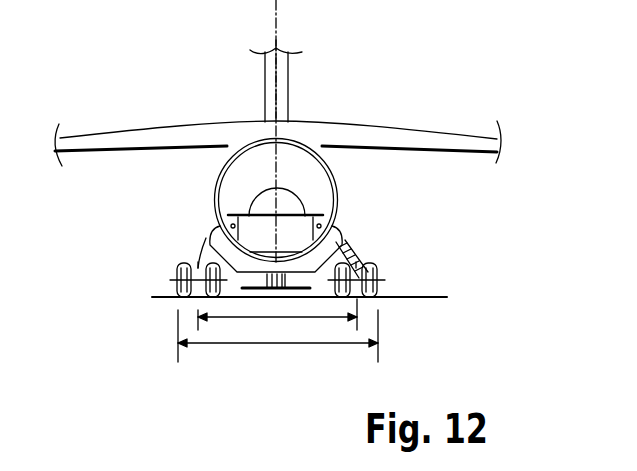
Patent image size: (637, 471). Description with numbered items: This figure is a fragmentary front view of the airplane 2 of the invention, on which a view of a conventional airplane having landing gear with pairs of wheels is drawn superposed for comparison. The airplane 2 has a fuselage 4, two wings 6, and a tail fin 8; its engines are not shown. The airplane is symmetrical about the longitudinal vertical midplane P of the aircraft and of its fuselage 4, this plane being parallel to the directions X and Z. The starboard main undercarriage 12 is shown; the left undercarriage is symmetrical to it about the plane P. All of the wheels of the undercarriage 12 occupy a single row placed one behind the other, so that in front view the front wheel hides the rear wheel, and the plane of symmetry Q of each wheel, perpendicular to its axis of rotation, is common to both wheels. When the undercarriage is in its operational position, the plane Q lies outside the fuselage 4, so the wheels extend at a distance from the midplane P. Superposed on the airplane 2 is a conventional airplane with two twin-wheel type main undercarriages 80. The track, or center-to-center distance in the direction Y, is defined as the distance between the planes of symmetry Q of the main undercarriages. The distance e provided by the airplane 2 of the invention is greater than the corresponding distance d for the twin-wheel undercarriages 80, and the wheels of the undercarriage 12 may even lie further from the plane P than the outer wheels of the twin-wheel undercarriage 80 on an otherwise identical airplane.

The airplane 2 is at (455, 96).
The fuselage 4 is at (340, 187).
The wings 6 is at (141, 136).
The tail fin 8 is at (277, 37).
The main undercarriage 12 is at (357, 239).
The twin-wheel type main undercarriage 80 is at (177, 278).
The longitudinal vertical midplane P is at (277, 100).
The plane of symmetry of the wheel Q is at (198, 268).
The distance between planes of symmetry of twin-wheel undercarriages d is at (277, 321).
The distance between planes of symmetry of main undercarriages e is at (278, 338).